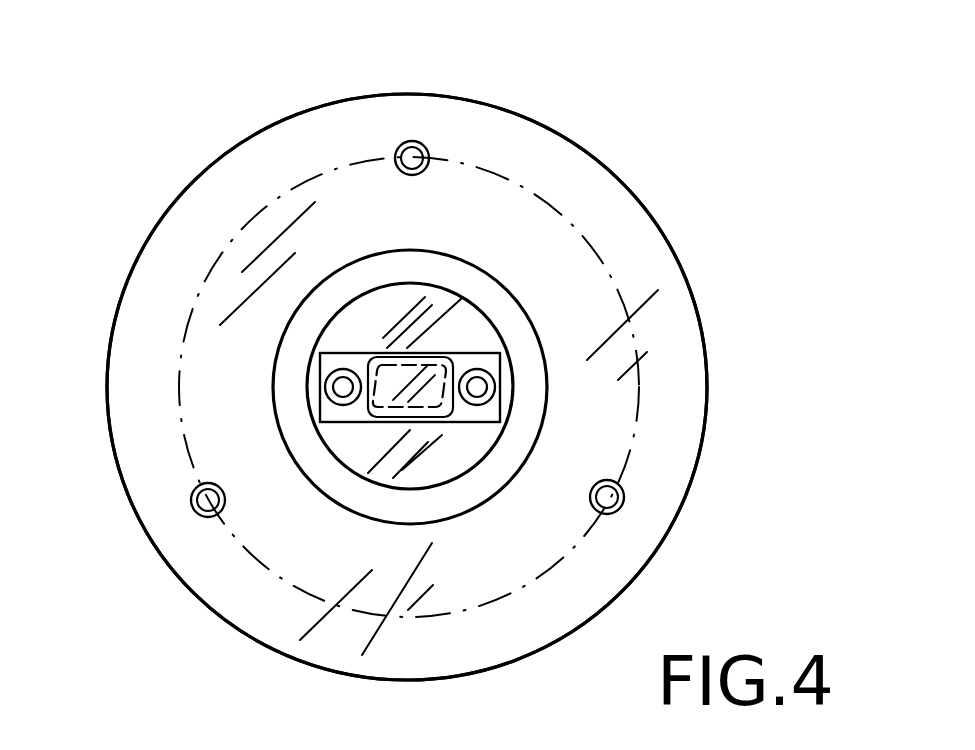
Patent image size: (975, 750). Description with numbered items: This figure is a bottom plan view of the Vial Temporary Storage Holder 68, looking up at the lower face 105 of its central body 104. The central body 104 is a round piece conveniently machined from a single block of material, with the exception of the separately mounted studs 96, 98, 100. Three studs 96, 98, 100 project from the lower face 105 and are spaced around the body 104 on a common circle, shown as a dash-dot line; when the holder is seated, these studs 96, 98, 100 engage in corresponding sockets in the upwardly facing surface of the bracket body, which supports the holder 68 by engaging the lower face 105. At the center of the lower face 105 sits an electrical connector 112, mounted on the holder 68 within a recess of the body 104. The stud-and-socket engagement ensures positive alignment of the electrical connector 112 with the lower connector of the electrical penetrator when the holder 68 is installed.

The Vial Temporary Storage Holder 68 is at (668, 125).
The central body 104 is at (700, 317).
The lower face 105 is at (645, 248).
The stud 96 is at (190, 492).
The stud 98 is at (428, 147).
The stud 100 is at (625, 492).
The electrical connector 112 is at (442, 367).